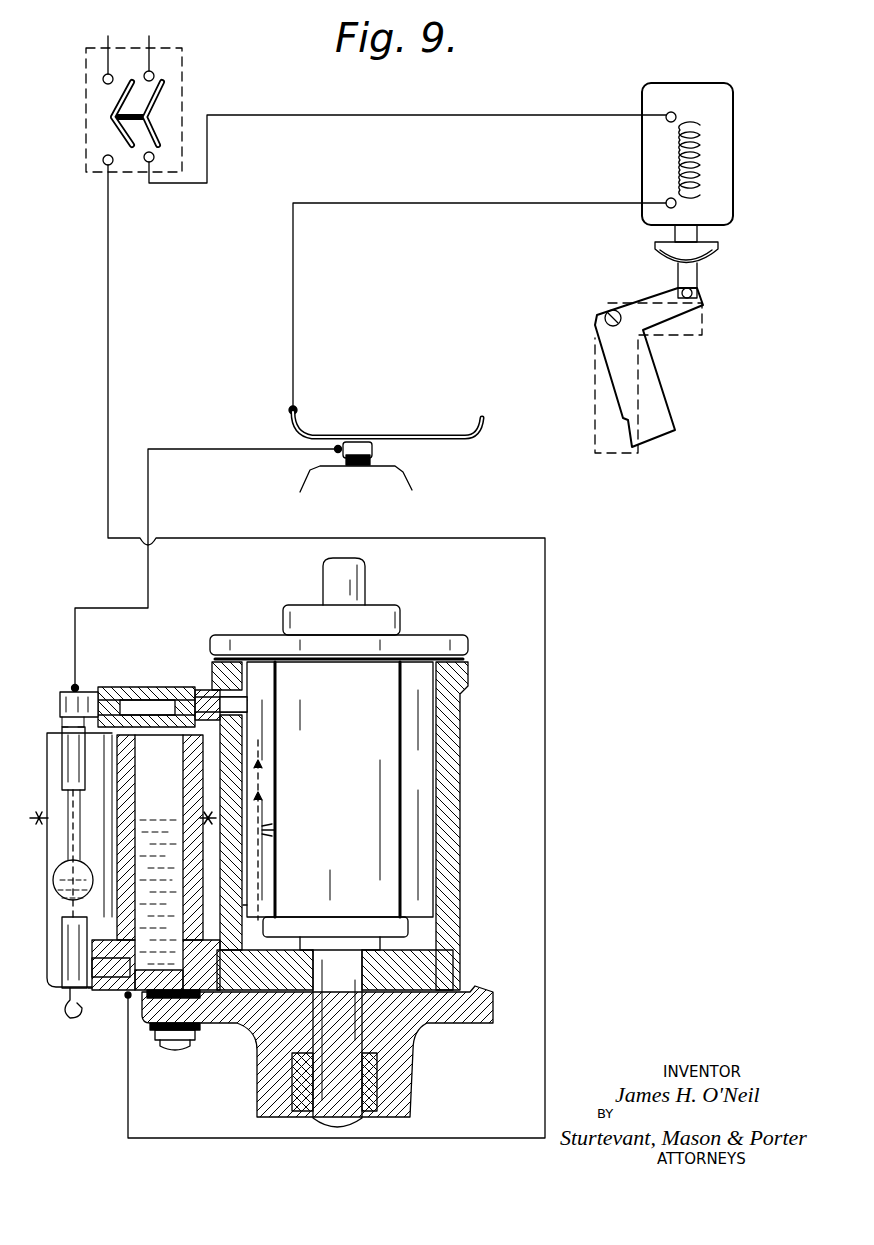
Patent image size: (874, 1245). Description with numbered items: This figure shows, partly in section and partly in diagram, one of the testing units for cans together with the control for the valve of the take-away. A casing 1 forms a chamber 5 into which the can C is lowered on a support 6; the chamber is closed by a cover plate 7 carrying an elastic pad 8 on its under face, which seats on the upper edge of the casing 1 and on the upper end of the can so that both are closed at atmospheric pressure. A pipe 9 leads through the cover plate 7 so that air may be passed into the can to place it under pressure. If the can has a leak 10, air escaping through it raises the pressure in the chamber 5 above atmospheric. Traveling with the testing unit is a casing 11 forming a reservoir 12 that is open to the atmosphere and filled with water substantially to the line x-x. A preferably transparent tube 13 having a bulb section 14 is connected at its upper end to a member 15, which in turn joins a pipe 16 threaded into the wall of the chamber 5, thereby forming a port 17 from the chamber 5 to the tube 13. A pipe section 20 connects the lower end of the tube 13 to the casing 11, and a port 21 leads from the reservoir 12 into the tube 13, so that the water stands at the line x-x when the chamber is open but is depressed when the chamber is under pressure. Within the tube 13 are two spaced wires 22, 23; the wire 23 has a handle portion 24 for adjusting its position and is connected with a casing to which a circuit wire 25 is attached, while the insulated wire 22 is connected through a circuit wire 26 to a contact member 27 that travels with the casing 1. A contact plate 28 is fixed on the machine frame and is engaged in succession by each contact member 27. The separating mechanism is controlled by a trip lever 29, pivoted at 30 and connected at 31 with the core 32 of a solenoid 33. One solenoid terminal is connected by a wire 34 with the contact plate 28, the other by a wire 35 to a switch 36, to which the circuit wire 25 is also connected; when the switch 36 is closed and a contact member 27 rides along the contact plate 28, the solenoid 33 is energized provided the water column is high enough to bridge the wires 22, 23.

The casing 1 is at (452, 770).
The chamber 5 is at (422, 707).
The support 6 is at (410, 930).
The cover plate 7 is at (345, 645).
The elastic pad 8 is at (246, 660).
The pipe 9 is at (335, 578).
The leak 10 is at (272, 830).
The casing 11 is at (206, 912).
The reservoir 12 is at (156, 862).
The tube 13 is at (76, 840).
The bulb section 14 is at (90, 925).
The member 15 is at (80, 760).
The pipe 16 is at (203, 690).
The port 17 is at (128, 690).
The pipe section 20 is at (59, 1001).
The port 21 is at (120, 985).
The wire 22 is at (80, 800).
The wire 23 is at (82, 872).
The handle portion 24 is at (59, 1018).
The circuit wire 25 is at (128, 1092).
The circuit wire 26 is at (90, 607).
The contact member 27 is at (352, 450).
The contact plate 28 is at (447, 435).
The trip lever 29 is at (648, 385).
The pivot 30 is at (612, 318).
The connection 31 is at (693, 292).
The core 32 is at (697, 233).
The solenoid 33 is at (718, 143).
The wire 34 is at (432, 206).
The wire 35 is at (407, 133).
The switch 36 is at (150, 115).